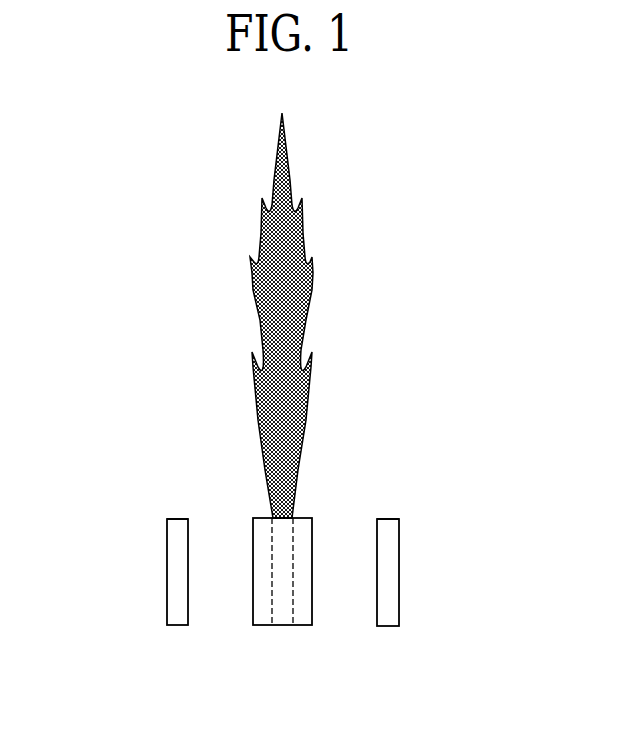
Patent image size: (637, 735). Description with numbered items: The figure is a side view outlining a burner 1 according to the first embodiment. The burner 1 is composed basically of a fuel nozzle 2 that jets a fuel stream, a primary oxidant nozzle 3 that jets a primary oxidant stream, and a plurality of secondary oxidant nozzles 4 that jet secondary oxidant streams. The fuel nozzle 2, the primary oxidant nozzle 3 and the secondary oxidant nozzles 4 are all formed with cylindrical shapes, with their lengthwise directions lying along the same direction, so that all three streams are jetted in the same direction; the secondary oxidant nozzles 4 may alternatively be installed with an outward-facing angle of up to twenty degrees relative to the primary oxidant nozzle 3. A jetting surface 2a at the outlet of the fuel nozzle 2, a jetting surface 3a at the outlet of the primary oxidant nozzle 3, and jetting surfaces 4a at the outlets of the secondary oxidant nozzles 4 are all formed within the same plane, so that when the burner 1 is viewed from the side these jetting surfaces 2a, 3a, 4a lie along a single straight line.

The burner 1 is at (122, 198).
The fuel nozzle 2 is at (254, 601).
The jetting surface 2a is at (272, 517).
The primary oxidant nozzle 3 is at (330, 596).
The jetting surface 3a is at (294, 517).
The secondary oxidant nozzle 4 is at (150, 585).
The jetting surface 4a is at (175, 518).